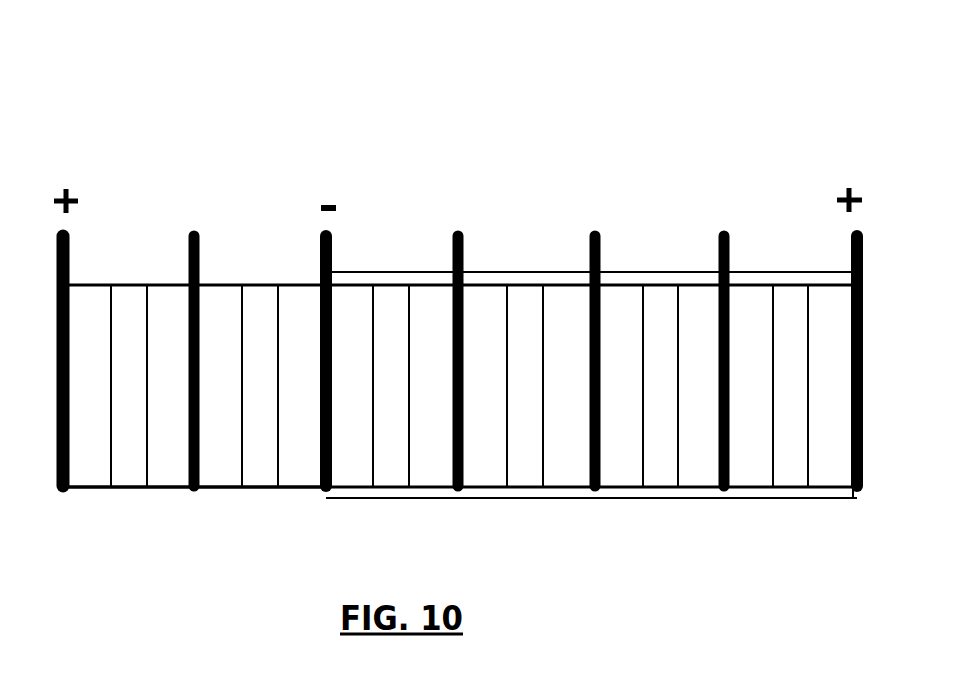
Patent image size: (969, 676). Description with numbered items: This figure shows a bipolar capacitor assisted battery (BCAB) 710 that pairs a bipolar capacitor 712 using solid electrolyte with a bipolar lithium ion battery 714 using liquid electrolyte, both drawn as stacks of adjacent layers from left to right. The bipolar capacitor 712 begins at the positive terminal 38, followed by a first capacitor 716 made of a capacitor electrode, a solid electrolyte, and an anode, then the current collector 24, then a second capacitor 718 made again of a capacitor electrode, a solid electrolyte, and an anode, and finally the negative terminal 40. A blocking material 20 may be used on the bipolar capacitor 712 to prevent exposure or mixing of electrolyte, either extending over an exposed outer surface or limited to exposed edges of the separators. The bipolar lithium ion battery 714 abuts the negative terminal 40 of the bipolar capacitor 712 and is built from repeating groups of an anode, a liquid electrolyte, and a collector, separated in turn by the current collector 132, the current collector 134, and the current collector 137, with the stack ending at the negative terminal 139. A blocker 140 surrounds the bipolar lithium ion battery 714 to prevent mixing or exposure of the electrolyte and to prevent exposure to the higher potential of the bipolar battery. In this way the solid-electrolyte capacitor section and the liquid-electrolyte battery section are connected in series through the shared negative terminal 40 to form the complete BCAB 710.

The bipolar capacitor assisted battery 710 is at (265, 98).
The bipolar capacitor 712 is at (197, 178).
The bipolar Li-Ion battery 714 is at (544, 173).
The first capacitor 716 is at (117, 538).
The second capacitor 718 is at (268, 546).
The blocking material 20 is at (144, 271).
The current collector 24 is at (194, 283).
The positive terminal 38 is at (63, 494).
The negative terminal 40 is at (323, 496).
The current collector 132 is at (453, 283).
The current collector 134 is at (590, 283).
The current collector 137 is at (733, 492).
The negative terminal 139 is at (860, 494).
The blocker 140 is at (676, 271).